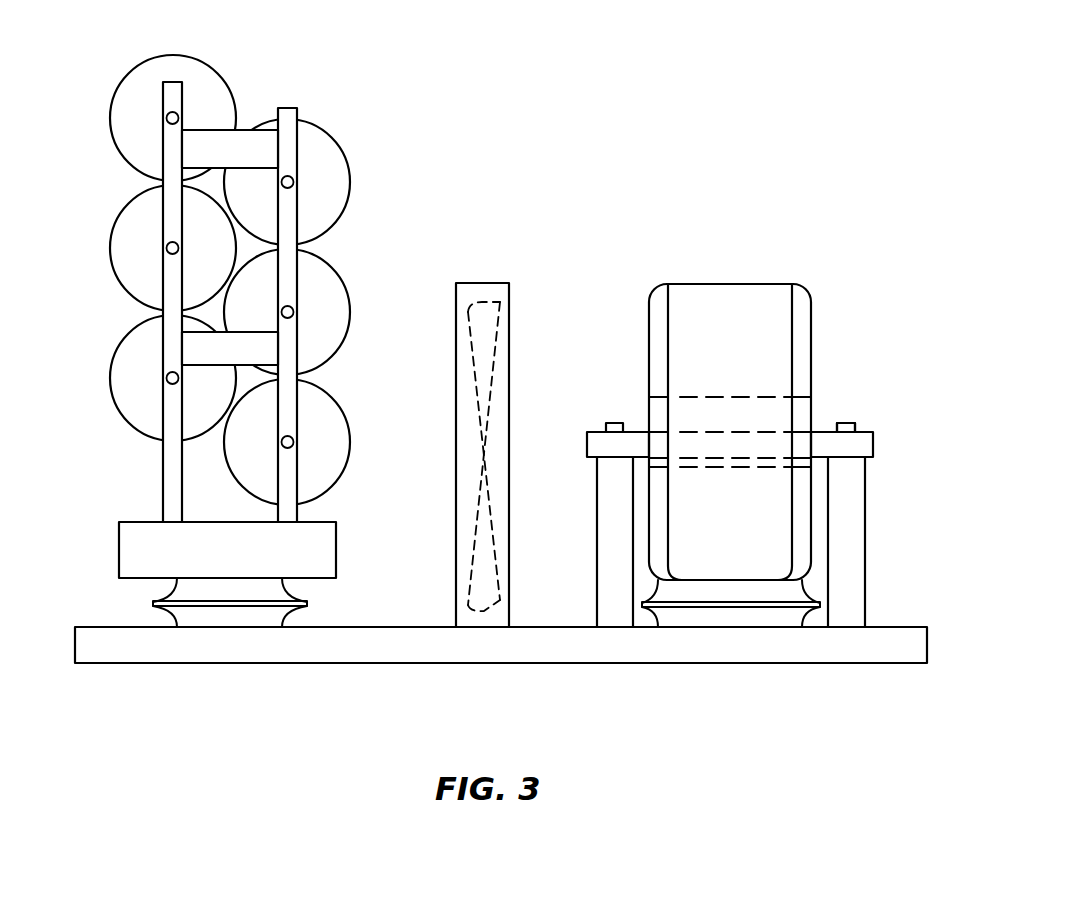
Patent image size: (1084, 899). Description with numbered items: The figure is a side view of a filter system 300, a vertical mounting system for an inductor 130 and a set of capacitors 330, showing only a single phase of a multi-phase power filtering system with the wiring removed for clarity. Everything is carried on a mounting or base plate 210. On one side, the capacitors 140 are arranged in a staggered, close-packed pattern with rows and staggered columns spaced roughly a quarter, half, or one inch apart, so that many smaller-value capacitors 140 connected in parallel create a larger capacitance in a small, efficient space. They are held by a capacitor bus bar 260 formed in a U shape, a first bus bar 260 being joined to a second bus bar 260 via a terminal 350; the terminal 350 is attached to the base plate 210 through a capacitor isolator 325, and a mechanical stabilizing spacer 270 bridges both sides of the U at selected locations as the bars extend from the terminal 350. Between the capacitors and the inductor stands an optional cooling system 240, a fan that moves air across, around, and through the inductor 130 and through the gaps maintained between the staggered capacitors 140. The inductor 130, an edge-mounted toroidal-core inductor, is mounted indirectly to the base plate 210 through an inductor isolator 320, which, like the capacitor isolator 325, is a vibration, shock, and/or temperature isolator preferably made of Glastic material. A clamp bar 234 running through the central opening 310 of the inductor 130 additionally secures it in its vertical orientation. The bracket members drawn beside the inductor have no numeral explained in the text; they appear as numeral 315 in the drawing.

The inductor 130 is at (772, 284).
The capacitor 140 is at (138, 65).
The base plate 210 is at (878, 628).
The clamp bar 234 is at (864, 430).
The cooling system 240 is at (493, 283).
The bus bar 260 is at (163, 455).
The mechanical stabilizing spacer 270 is at (252, 158).
The filter system 300 is at (656, 70).
The central opening 310 is at (753, 425).
The housing support bracket 315 is at (597, 525).
The inductor isolator 320 is at (722, 580).
The capacitor isolator 325 is at (307, 604).
The set of capacitors 330 is at (258, 62).
The terminal 350 is at (119, 548).